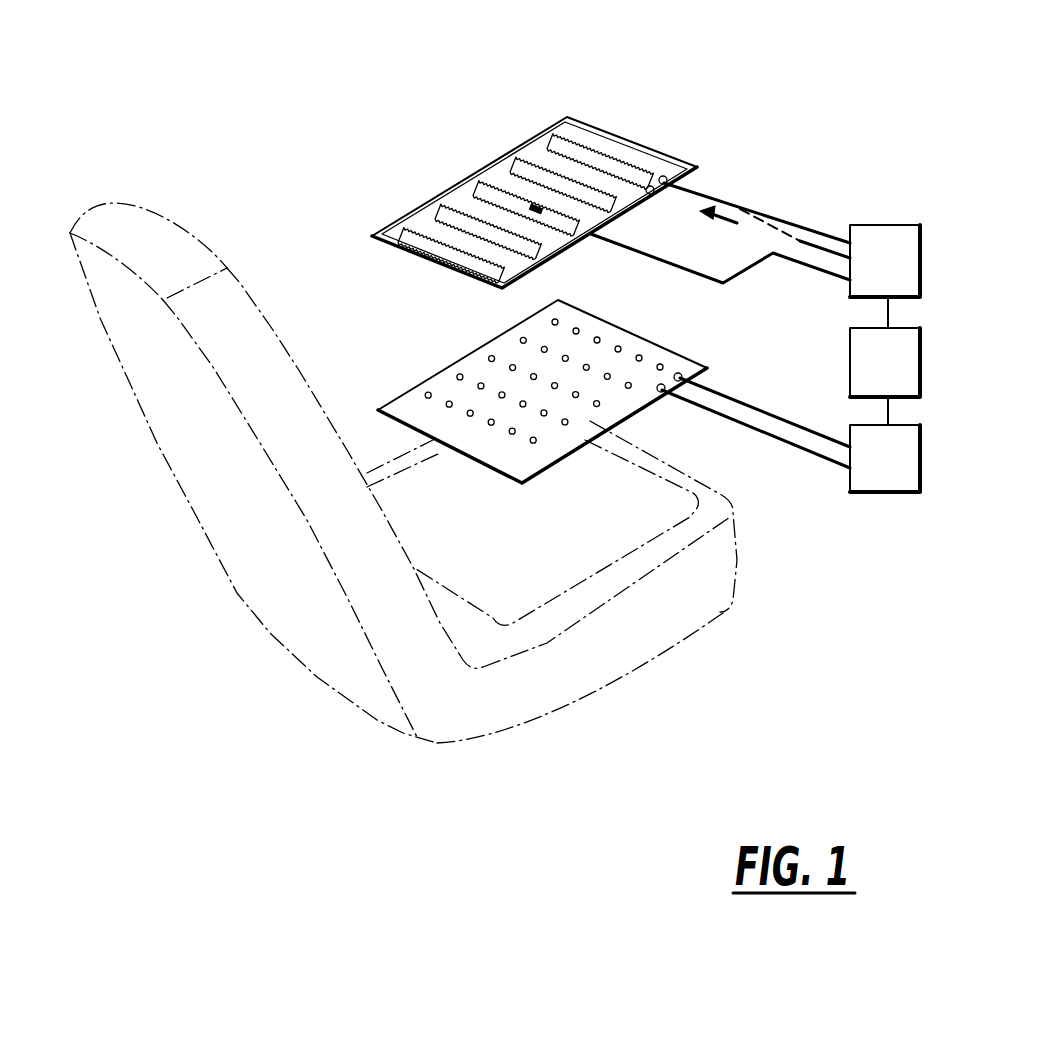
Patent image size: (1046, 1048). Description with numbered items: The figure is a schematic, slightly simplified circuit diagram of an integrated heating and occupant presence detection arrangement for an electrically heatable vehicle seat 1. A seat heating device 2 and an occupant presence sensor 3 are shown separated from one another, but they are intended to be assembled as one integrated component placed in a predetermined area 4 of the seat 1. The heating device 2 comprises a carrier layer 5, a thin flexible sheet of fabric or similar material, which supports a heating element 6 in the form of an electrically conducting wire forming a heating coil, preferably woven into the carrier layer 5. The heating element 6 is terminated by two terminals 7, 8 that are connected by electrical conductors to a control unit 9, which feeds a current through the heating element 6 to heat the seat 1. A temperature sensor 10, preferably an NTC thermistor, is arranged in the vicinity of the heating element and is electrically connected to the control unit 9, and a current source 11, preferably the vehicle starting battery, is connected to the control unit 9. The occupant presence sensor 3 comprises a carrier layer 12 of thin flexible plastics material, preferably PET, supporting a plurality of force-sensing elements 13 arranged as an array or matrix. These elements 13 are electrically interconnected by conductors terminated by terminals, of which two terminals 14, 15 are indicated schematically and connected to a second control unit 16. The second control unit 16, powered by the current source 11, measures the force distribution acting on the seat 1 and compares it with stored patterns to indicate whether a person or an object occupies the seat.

The seat 1 is at (585, 672).
The seat heating device 2 is at (611, 150).
The occupant presence sensor 3 is at (588, 376).
The predetermined area 4 is at (653, 520).
The carrier layer 5 is at (654, 157).
The heating element 6 is at (618, 157).
The terminal 7 is at (651, 188).
The terminal 8 is at (664, 176).
The control unit 9 is at (884, 240).
The temperature sensor 10 is at (535, 205).
The current source 11 is at (860, 373).
The carrier layer 12 is at (467, 360).
The force-sensing elements 13 is at (478, 388).
The terminal 14 is at (681, 375).
The terminal 15 is at (664, 385).
The second control unit 16 is at (893, 483).